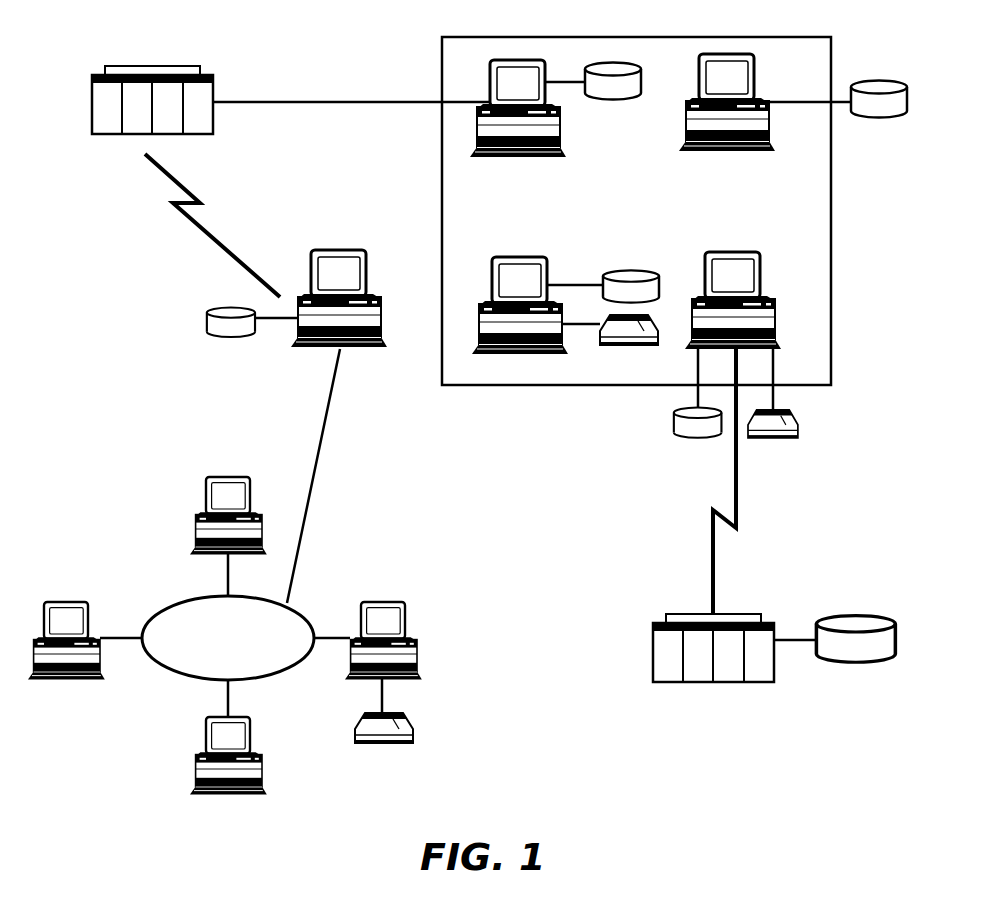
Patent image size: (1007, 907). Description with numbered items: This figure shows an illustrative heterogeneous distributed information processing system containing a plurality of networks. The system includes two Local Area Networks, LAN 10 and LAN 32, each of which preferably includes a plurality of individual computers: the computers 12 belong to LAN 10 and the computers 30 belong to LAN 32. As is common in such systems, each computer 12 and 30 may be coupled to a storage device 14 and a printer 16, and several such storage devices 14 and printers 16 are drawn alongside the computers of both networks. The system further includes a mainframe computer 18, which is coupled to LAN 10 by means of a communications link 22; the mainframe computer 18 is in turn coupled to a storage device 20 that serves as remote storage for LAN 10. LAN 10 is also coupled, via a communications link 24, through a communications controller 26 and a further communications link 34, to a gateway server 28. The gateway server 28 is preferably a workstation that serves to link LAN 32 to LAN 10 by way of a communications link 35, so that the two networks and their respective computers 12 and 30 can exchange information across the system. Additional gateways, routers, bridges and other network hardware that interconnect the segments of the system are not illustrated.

The local area network 10 is at (545, 388).
The computer 12 is at (520, 158).
The storage device 14 is at (206, 326).
The printer 16 is at (635, 345).
The mainframe computer 18 is at (680, 612).
The storage device 20 is at (836, 612).
The communications link 22 is at (737, 495).
The communications link 24 is at (258, 102).
The communications controller 26 is at (92, 108).
The gateway server 28 is at (338, 250).
The computer 30 is at (228, 478).
The local area network 32 is at (166, 668).
The communications link 34 is at (207, 228).
The communications link 35 is at (322, 453).